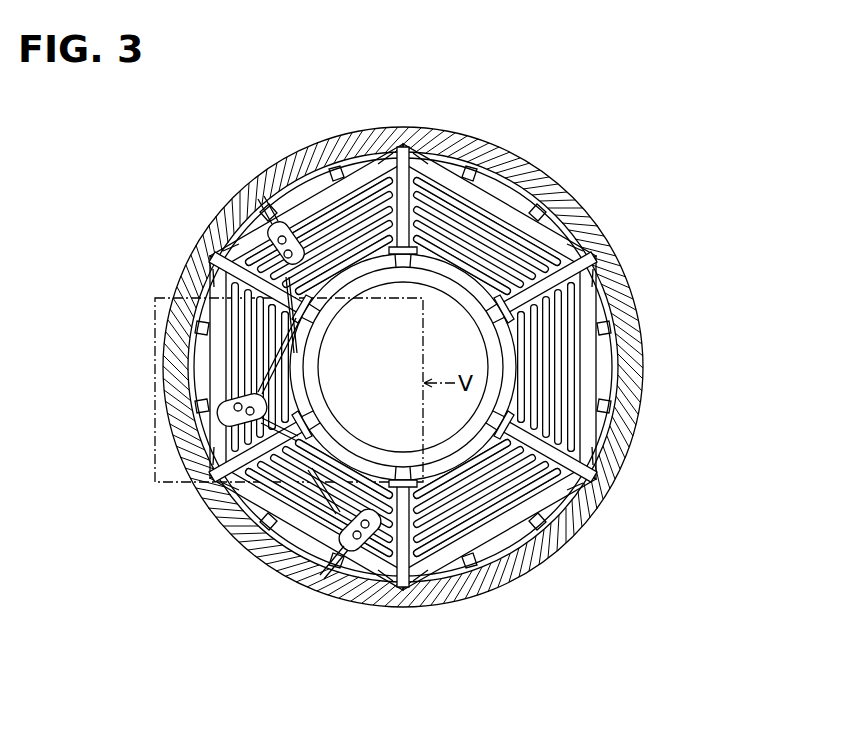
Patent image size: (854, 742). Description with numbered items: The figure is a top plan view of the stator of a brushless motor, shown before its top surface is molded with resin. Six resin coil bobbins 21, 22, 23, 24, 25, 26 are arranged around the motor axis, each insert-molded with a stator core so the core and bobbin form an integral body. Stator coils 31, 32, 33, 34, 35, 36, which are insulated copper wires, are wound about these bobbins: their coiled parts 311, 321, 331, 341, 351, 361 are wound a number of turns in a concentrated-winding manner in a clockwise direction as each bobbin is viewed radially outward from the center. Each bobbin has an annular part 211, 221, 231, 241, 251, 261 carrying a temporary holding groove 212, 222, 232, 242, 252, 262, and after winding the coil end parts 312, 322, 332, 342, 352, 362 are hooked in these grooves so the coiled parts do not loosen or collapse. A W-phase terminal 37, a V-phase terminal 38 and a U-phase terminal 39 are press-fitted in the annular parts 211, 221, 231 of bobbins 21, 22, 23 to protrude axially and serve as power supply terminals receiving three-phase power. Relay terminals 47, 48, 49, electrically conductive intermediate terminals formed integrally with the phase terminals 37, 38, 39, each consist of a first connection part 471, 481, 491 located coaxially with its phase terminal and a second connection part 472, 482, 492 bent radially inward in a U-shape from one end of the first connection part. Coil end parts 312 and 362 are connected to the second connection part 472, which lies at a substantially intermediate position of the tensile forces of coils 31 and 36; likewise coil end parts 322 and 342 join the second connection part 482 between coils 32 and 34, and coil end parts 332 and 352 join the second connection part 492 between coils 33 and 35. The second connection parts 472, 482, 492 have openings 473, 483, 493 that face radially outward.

The coil bobbin 21 is at (290, 515).
The coil bobbin 22 is at (218, 300).
The coil bobbin 23 is at (345, 185).
The coil bobbin 24 is at (500, 200).
The coil bobbin 25 is at (590, 370).
The coil bobbin 26 is at (520, 530).
The annular part 211 is at (397, 580).
The temporary holding groove 212 is at (255, 490).
The annular part 221 is at (220, 470).
The temporary holding groove 222 is at (222, 300).
The annular part 231 is at (228, 268).
The temporary holding groove 232 is at (338, 205).
The annular part 241 is at (455, 168).
The temporary holding groove 242 is at (470, 175).
The annular part 251 is at (598, 330).
The temporary holding groove 252 is at (600, 300).
The annular part 261 is at (500, 555).
The temporary holding groove 262 is at (420, 560).
The stator coil 31 is at (300, 470).
The stator coil 32 is at (240, 300).
The stator coil 33 is at (372, 225).
The stator coil 34 is at (505, 225).
The stator coil 35 is at (560, 380).
The stator coil 36 is at (480, 520).
The coiled part 311 is at (300, 480).
The coil end part 312 is at (320, 520).
The coiled part 321 is at (232, 322).
The coil end part 322 is at (245, 345).
The coiled part 331 is at (312, 225).
The coil end part 332 is at (386, 230).
The coiled part 341 is at (560, 280).
The coil end part 342 is at (262, 478).
The coiled part 351 is at (590, 420).
The coil end part 352 is at (250, 290).
The coiled part 361 is at (570, 470).
The coil end part 362 is at (430, 545).
The W-phase terminal 37 is at (345, 555).
The V-phase terminal 38 is at (270, 390).
The U-phase terminal 39 is at (292, 265).
The relay terminal 47 is at (358, 540).
The first connection part 471 is at (340, 530).
The second connection part 472 is at (362, 535).
The opening 473 is at (350, 545).
The relay terminal 48 is at (250, 415).
The first connection part 481 is at (233, 398).
The second connection part 482 is at (262, 423).
The opening 483 is at (240, 410).
The relay terminal 49 is at (272, 252).
The first connection part 491 is at (278, 228).
The second connection part 492 is at (262, 262).
The opening 493 is at (283, 243).